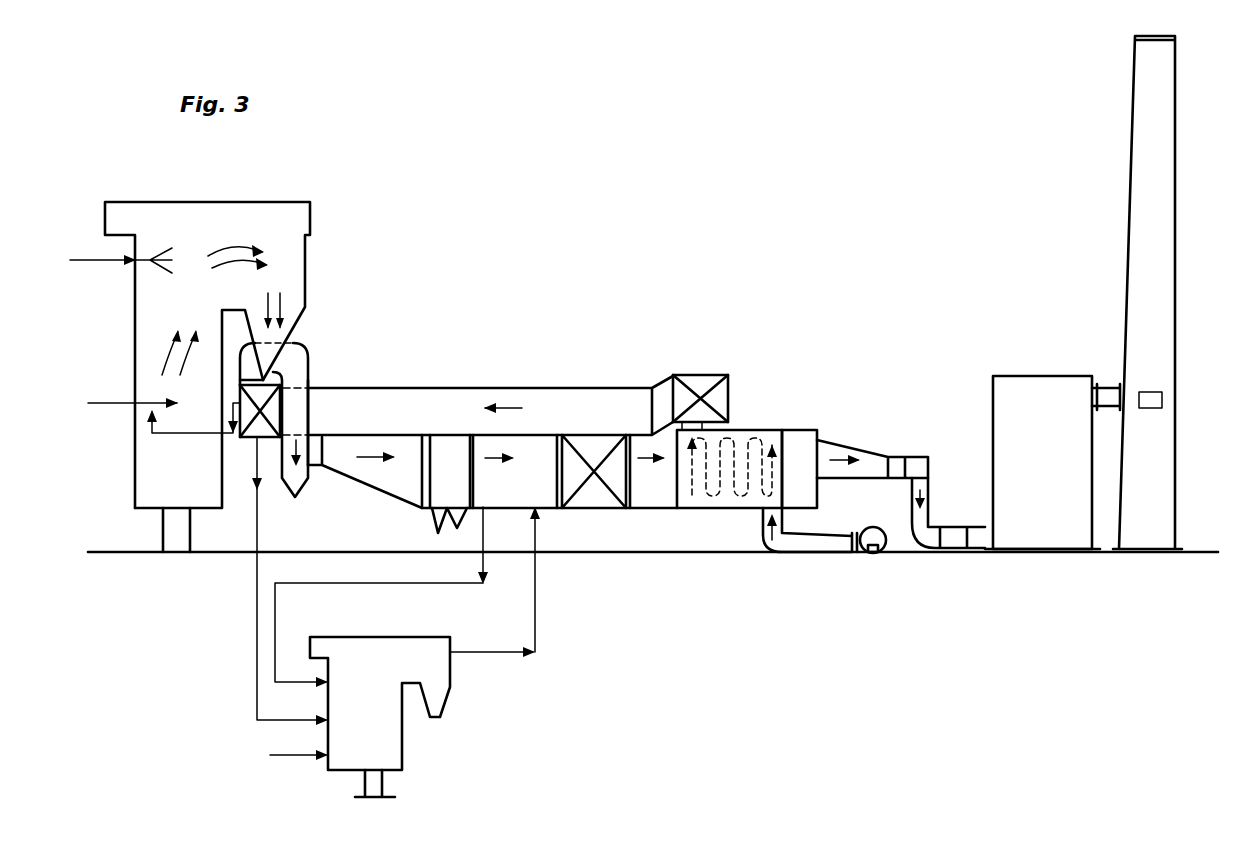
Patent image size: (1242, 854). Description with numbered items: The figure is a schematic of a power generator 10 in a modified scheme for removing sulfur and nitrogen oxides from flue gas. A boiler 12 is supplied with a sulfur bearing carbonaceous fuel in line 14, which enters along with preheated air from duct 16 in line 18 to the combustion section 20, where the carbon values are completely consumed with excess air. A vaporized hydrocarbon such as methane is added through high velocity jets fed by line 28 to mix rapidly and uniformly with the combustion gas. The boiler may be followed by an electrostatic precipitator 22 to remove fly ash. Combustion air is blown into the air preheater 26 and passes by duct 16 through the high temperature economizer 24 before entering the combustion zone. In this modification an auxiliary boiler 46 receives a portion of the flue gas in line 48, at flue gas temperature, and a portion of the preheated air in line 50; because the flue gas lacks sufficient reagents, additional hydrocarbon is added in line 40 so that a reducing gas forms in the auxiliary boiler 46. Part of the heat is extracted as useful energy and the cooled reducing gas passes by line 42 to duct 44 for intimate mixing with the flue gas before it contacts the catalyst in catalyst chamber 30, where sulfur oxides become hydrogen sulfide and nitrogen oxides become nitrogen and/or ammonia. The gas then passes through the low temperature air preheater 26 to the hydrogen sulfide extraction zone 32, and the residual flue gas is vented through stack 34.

The power generator 10 is at (455, 378).
The boiler 12 is at (135, 334).
The fuel line 14 is at (100, 406).
The air duct 16 is at (352, 382).
The air line 18 is at (200, 435).
The combustion section 20 is at (145, 485).
The electrostatic precipitator 22 is at (432, 520).
The high temperature economizer 24 is at (245, 438).
The air preheater 26 is at (718, 500).
The hydrocarbon line 28 is at (98, 258).
The catalyst zone 30 is at (597, 498).
The hydrogen sulfide extraction unit 32 is at (1025, 538).
The stack 34 is at (1165, 525).
The hydrocarbon line 40 is at (300, 757).
The reducing gas line 42 is at (537, 603).
The duct 44 is at (548, 498).
The auxiliary boiler 46 is at (450, 685).
The flue gas line 48 is at (357, 583).
The preheated air line 50 is at (255, 620).